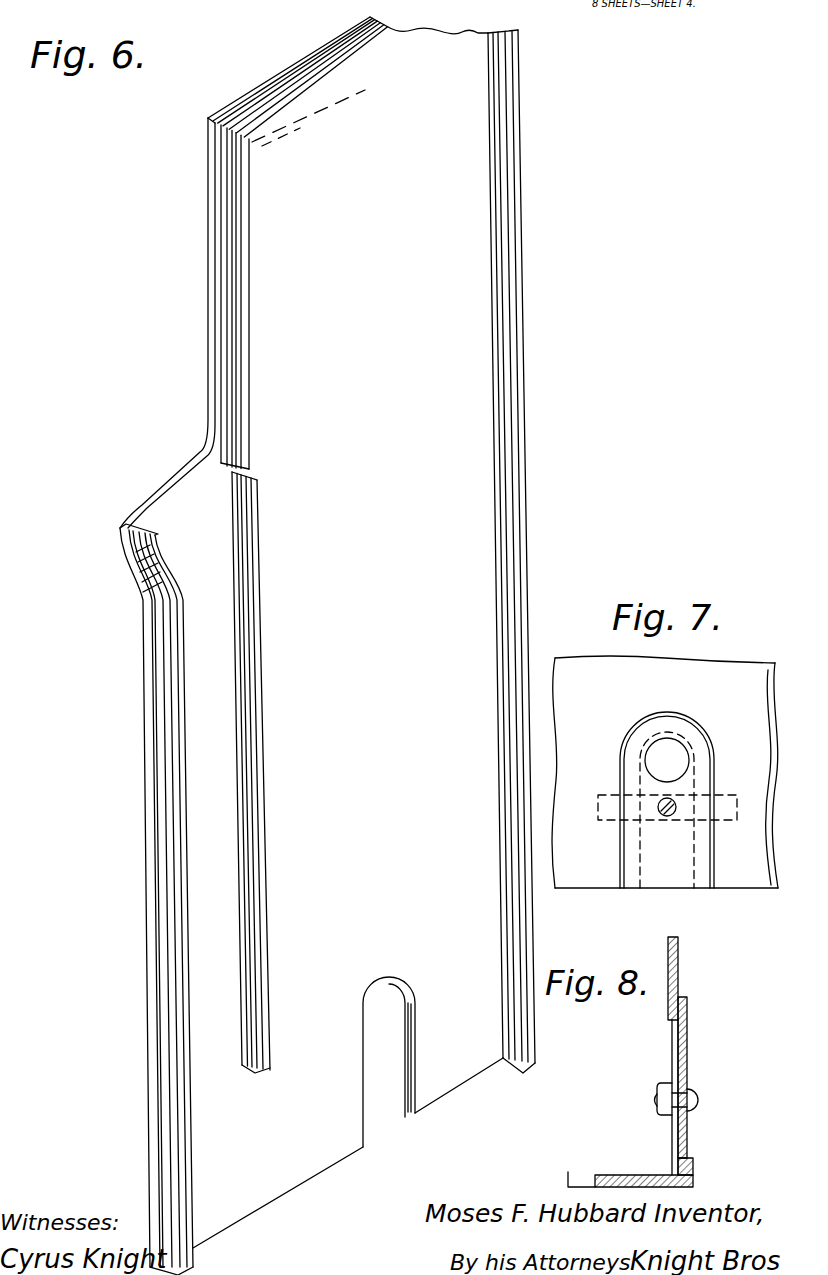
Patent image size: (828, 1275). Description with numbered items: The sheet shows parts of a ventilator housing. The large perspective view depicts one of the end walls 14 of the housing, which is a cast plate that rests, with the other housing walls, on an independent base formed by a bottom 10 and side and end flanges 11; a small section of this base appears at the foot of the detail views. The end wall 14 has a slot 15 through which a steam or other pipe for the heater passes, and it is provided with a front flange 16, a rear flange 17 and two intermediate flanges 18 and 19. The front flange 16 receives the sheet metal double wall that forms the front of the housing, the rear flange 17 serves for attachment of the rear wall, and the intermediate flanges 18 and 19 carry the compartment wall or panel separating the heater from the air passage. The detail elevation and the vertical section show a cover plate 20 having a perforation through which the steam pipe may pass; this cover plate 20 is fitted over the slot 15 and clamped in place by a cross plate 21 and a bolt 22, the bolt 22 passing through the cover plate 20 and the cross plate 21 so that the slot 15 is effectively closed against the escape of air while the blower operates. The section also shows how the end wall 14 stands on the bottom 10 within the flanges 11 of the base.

In FIG. 8, the bottom 10 is at (638, 1173).
In FIG. 8, the side and end flanges 11 is at (697, 1172).
In FIG. 6, the end wall 14 is at (442, 372).
In FIG. 7, the end wall 14 is at (665, 772).
In FIG. 8, the end wall 14 is at (678, 980).
In FIG. 6, the slot 15 is at (392, 1018).
In FIG. 6, the front flange 16 is at (178, 663).
In FIG. 6, the rear flange 17 is at (520, 510).
In FIG. 6, the intermediate flange 18 is at (247, 413).
In FIG. 6, the intermediate flange 19 is at (255, 633).
In FIG. 7, the cover plate 20 is at (700, 740).
In FIG. 8, the cover plate 20 is at (687, 1015).
In FIG. 7, the cross plate 21 is at (722, 807).
In FIG. 7, the bolt 22 is at (667, 816).
In FIG. 8, the bolt 22 is at (694, 1098).